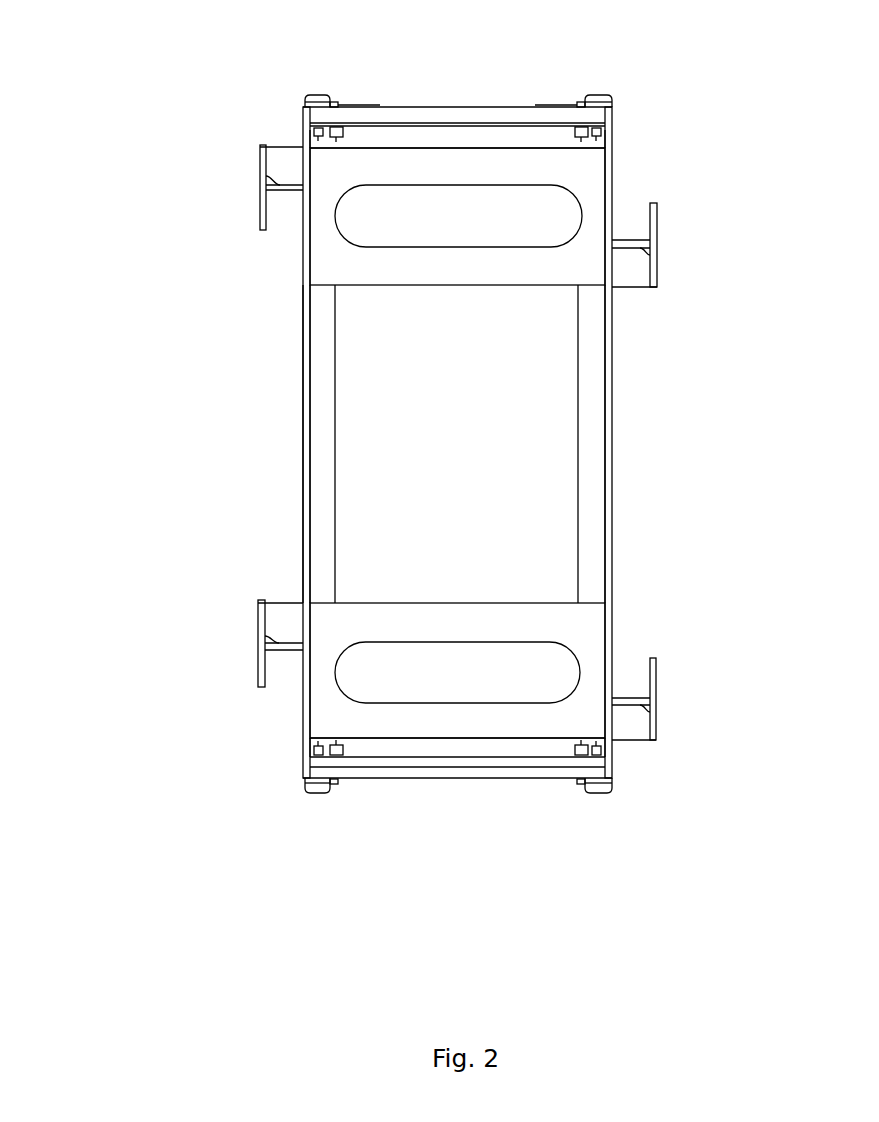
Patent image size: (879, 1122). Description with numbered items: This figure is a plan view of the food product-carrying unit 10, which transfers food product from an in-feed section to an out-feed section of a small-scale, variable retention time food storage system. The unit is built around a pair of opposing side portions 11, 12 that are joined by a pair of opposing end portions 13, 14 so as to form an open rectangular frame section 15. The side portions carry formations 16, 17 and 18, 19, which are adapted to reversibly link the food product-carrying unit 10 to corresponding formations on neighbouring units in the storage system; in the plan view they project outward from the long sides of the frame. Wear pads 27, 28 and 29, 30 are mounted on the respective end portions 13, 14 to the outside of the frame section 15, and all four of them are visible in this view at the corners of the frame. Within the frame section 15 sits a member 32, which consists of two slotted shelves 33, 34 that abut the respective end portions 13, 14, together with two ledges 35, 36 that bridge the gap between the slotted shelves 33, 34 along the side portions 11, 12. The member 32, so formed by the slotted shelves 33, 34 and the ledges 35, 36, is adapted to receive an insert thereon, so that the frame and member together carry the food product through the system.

The food product-carrying unit 10 is at (148, 228).
The side portion 11 is at (610, 368).
The side portion 12 is at (322, 345).
The end portion 13 is at (452, 777).
The end portion 14 is at (428, 113).
The frame section 15 is at (320, 405).
The formation 16 is at (655, 698).
The formation 17 is at (660, 240).
The formation 18 is at (260, 603).
The formation 19 is at (262, 158).
The wear pad 27 is at (597, 793).
The wear pad 28 is at (313, 793).
The wear pad 29 is at (598, 93).
The wear pad 30 is at (313, 93).
The member 32 is at (678, 134).
The slotted shelf 33 is at (592, 635).
The slotted shelf 34 is at (597, 183).
The ledge 35 is at (592, 467).
The ledge 36 is at (320, 477).